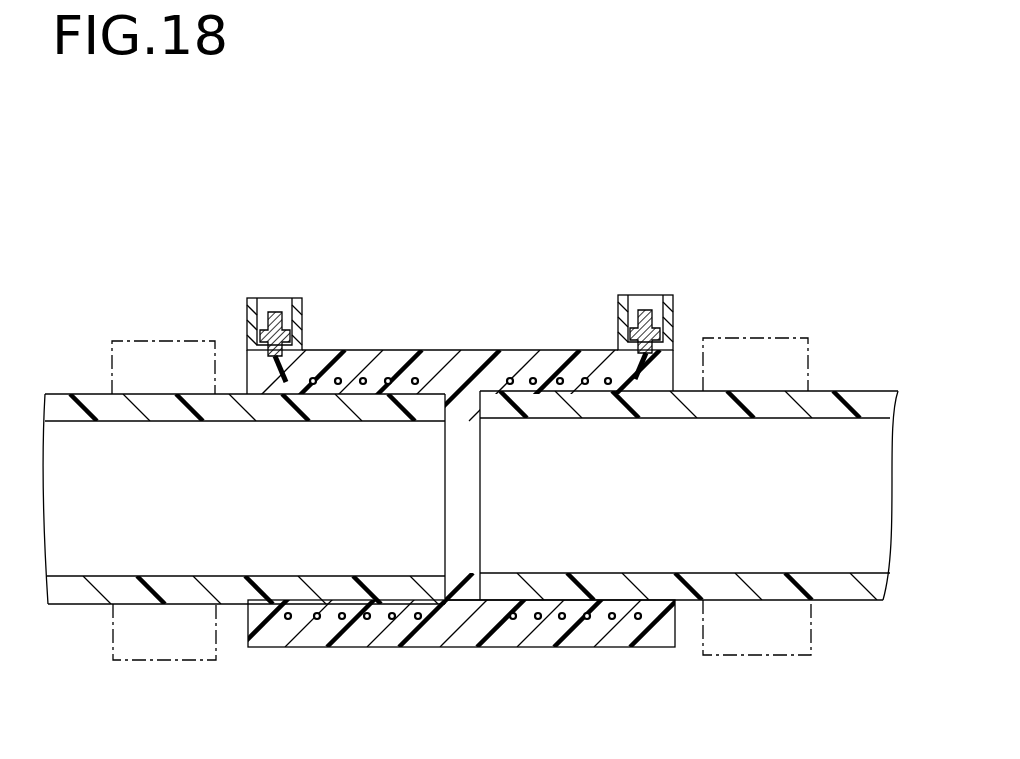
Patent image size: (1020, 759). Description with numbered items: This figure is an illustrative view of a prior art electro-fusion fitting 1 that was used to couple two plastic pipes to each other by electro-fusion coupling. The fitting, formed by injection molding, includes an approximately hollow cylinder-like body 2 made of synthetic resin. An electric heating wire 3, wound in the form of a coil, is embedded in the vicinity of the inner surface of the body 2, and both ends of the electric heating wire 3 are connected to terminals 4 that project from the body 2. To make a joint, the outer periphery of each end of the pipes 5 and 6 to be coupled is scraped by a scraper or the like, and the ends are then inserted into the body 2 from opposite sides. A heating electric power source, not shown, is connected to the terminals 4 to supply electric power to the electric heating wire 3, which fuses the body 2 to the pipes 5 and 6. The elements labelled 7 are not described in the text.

The electro-fusion fitting 1 is at (469, 412).
The body 2 is at (443, 346).
The electric heating wire 3 is at (318, 352).
The terminals 4 is at (275, 322).
The pipe 5 is at (843, 389).
The pipe 6 is at (78, 394).
The clamp 7 is at (165, 341).